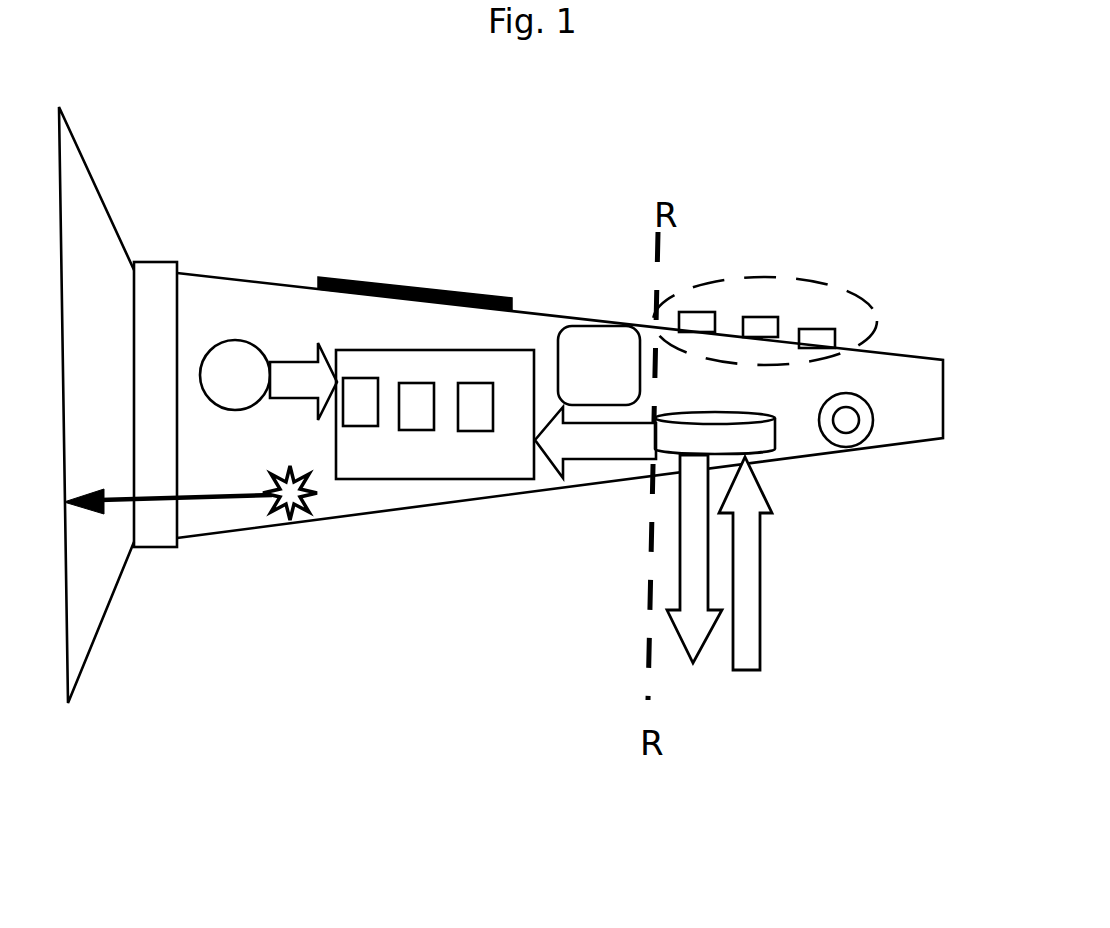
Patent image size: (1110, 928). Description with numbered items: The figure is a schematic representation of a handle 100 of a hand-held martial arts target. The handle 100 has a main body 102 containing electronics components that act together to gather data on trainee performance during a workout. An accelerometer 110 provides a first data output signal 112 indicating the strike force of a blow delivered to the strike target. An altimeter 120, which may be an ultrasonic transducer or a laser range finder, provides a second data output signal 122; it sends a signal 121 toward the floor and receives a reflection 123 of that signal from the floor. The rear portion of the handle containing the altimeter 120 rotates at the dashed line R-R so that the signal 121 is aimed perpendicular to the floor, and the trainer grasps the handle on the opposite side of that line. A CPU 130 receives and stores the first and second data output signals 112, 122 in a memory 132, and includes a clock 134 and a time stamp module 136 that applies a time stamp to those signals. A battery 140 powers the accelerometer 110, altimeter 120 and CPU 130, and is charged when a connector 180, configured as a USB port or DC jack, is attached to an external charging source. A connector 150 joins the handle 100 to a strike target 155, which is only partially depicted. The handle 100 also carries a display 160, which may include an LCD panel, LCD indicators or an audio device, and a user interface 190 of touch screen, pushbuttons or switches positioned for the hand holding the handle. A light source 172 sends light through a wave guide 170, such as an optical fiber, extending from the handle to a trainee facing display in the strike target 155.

The handle 100 is at (853, 94).
The main body 102 is at (280, 283).
The accelerometer 110 is at (230, 373).
The first data output signal 112 is at (303, 381).
The altimeter 120 is at (760, 440).
The signal 121 is at (694, 583).
The second data output signal 122 is at (595, 442).
The reflection 123 is at (785, 563).
The CPU 130 is at (518, 458).
The memory 132 is at (353, 412).
The clock 134 is at (417, 418).
The time stamp module 136 is at (478, 414).
The battery 140 is at (620, 365).
The connector 150 is at (152, 547).
The strike target 155 is at (93, 547).
The display 160 is at (482, 294).
The wave guide 170 is at (213, 497).
The light source 172 is at (295, 510).
The connector 180 is at (848, 425).
The user interface 190 is at (832, 280).